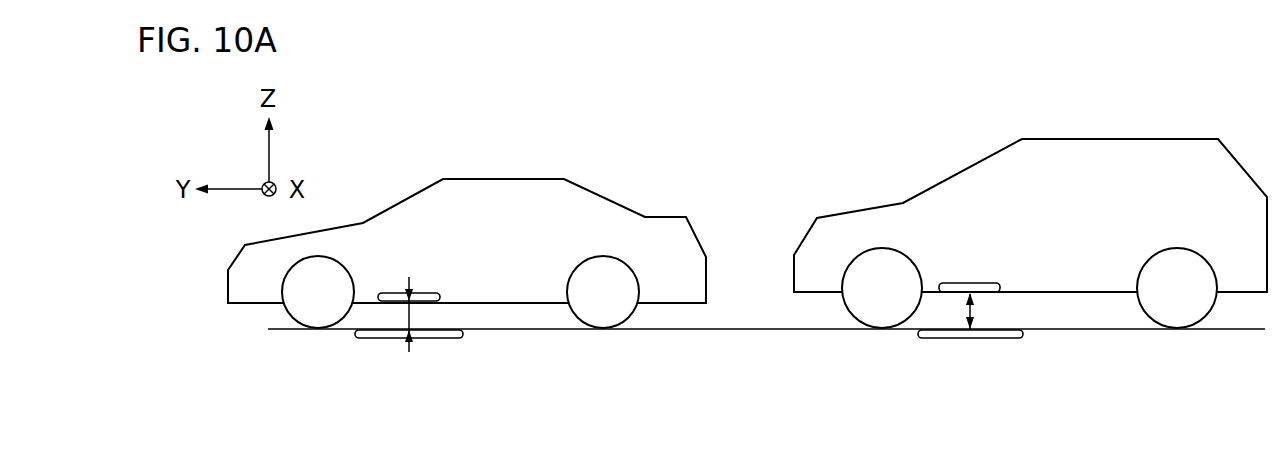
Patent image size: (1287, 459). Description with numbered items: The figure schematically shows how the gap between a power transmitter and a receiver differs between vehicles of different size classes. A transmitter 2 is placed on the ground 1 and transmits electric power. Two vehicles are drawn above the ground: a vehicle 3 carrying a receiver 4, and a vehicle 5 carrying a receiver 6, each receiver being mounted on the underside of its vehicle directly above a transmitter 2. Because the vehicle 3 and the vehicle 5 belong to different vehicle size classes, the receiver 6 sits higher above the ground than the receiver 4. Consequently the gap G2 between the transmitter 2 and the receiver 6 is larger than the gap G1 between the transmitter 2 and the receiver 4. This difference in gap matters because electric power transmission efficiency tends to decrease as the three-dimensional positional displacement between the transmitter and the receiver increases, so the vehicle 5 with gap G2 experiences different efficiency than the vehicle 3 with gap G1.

The ground 1 is at (743, 328).
The transmitter 2 is at (388, 334).
The vehicle 3 is at (498, 192).
The receiver 4 is at (428, 296).
The vehicle 5 is at (1166, 152).
The receiver 6 is at (991, 287).
The gap G1 is at (425, 314).
The gap G2 is at (987, 311).